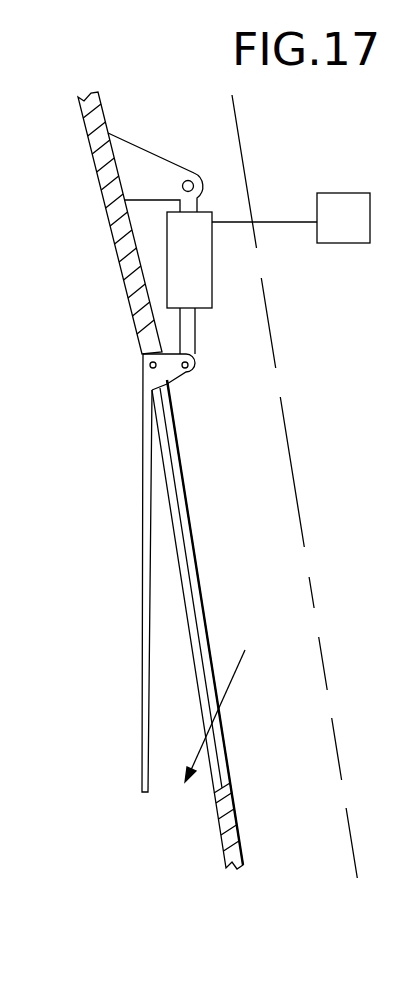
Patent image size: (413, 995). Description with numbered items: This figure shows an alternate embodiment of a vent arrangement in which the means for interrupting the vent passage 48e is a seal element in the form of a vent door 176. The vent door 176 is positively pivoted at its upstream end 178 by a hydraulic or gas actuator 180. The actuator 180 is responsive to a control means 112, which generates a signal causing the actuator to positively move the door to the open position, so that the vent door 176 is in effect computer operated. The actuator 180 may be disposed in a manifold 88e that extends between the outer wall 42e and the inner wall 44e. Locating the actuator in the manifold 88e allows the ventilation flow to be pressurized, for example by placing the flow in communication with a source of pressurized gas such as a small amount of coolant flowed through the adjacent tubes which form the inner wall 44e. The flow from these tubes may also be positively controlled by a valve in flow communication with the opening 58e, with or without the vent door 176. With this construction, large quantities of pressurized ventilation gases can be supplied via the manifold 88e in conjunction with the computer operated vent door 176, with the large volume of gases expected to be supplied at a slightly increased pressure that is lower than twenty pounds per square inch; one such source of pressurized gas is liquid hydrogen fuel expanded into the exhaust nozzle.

The inner wall 44e is at (97, 108).
The manifold 88e is at (188, 132).
The control means 112 is at (364, 230).
The hydraulic or gas actuator 180 is at (195, 290).
The upstream end 178 is at (157, 368).
The vent door 176 is at (147, 715).
The outer wall 42e is at (295, 482).
The vent passage 48e is at (224, 704).
The opening 58e is at (223, 758).